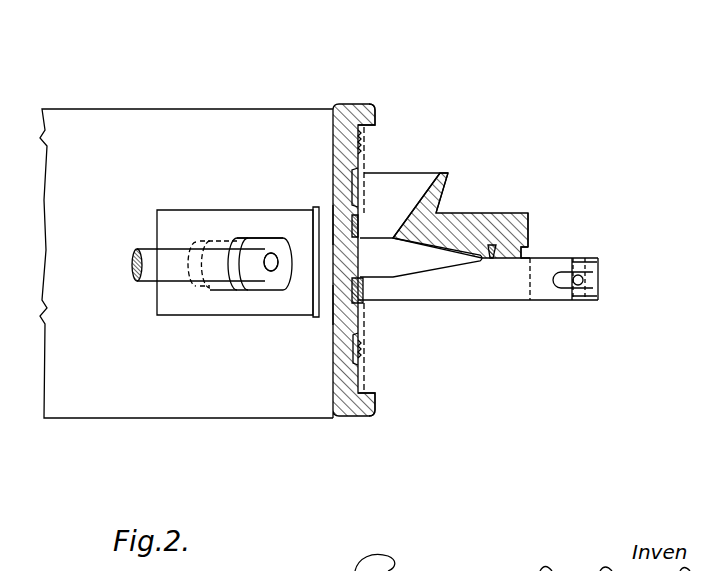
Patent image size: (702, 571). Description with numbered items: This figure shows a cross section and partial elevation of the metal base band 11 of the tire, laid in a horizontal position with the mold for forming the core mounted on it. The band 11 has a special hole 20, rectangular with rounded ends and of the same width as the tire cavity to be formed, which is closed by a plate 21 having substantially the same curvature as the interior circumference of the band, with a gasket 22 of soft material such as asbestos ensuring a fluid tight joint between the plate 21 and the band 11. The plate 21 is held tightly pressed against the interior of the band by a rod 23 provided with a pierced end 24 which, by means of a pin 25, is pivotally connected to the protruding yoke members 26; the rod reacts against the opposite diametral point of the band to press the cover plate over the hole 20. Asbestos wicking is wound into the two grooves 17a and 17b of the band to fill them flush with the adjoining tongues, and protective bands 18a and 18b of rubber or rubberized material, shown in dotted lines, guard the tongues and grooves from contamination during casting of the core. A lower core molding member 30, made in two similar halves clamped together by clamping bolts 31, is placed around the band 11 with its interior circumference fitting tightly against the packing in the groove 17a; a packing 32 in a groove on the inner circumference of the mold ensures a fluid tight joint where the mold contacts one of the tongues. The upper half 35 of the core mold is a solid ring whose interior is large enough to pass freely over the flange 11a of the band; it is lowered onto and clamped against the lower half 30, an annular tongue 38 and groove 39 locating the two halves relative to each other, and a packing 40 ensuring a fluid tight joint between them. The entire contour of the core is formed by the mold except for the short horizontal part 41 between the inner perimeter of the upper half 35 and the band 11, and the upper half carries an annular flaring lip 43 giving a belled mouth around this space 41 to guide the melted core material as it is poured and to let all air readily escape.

The metal base band 11 is at (348, 413).
The flange 11a is at (377, 407).
The groove 17a is at (333, 225).
The groove 17b is at (333, 305).
The protective band 18a is at (365, 140).
The protective band 18b is at (365, 360).
The hole 20 is at (278, 256).
The plate 21 is at (178, 315).
The gasket 22 is at (316, 318).
The rod 23 is at (147, 282).
The pierced end 24 is at (237, 237).
The pin 25 is at (276, 272).
The yoke members 26 is at (253, 290).
The lower core molding member 30 is at (505, 300).
The clamping bolts 31 is at (578, 286).
The packing 32 is at (363, 298).
The upper half of the core mold 35 is at (482, 213).
The annular tongue 38 is at (528, 257).
The groove 39 is at (530, 224).
The packing 40 is at (507, 213).
The horizontal part 41 is at (380, 236).
The annular flaring lip 43 is at (450, 173).